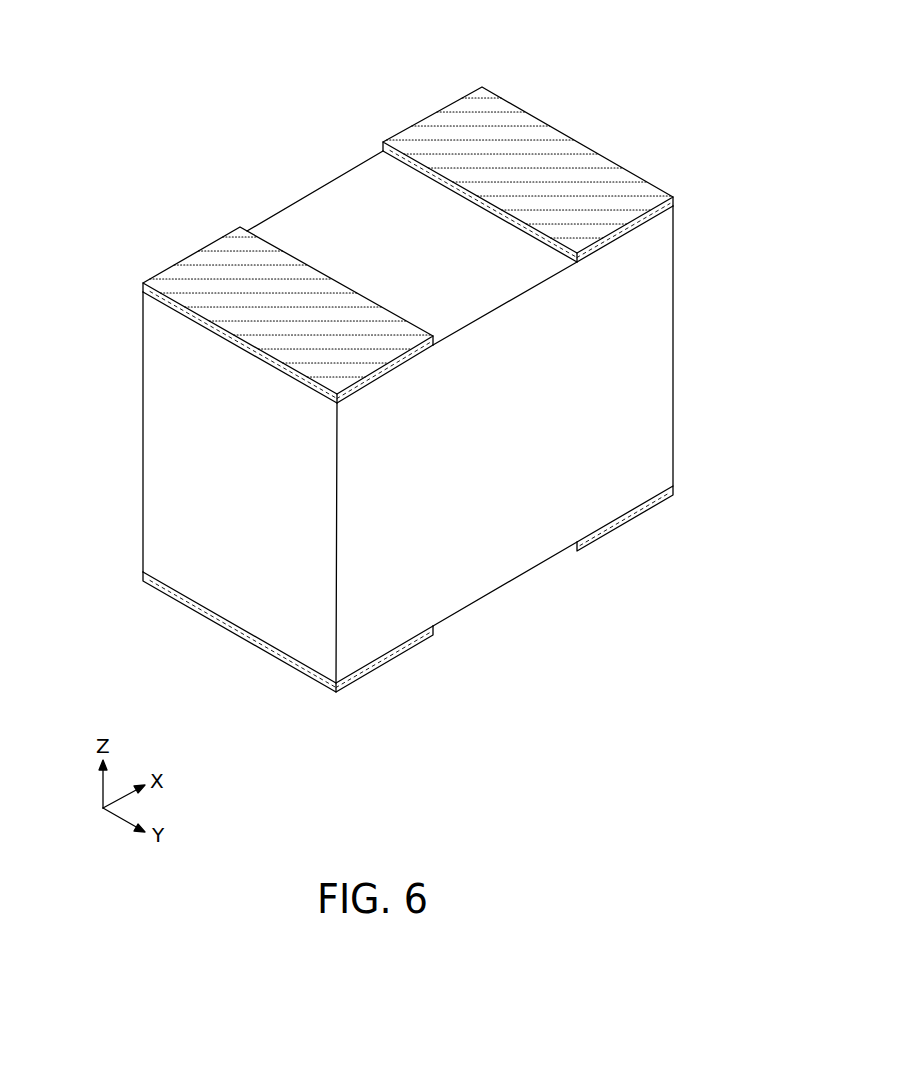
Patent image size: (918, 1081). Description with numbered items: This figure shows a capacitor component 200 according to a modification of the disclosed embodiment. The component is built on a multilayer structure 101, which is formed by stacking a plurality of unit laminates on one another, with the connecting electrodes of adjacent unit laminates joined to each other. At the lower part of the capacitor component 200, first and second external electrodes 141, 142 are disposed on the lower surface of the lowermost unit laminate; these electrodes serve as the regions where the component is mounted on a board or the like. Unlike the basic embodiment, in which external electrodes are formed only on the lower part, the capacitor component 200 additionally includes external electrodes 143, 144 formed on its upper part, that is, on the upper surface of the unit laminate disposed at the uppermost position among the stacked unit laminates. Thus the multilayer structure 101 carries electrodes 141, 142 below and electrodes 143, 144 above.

The capacitor component 200 is at (313, 33).
The multilayer structure 101 is at (337, 200).
The first external electrode 141 is at (380, 660).
The second external electrode 142 is at (623, 524).
The external electrode 143 is at (198, 270).
The external electrode 144 is at (440, 130).